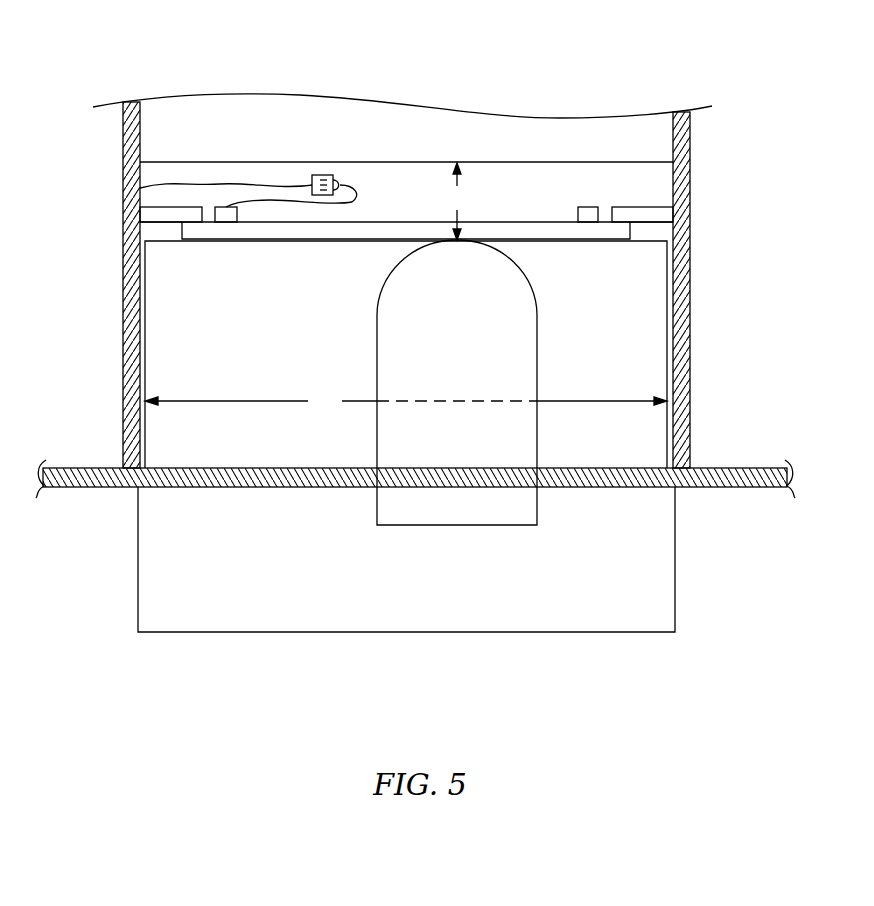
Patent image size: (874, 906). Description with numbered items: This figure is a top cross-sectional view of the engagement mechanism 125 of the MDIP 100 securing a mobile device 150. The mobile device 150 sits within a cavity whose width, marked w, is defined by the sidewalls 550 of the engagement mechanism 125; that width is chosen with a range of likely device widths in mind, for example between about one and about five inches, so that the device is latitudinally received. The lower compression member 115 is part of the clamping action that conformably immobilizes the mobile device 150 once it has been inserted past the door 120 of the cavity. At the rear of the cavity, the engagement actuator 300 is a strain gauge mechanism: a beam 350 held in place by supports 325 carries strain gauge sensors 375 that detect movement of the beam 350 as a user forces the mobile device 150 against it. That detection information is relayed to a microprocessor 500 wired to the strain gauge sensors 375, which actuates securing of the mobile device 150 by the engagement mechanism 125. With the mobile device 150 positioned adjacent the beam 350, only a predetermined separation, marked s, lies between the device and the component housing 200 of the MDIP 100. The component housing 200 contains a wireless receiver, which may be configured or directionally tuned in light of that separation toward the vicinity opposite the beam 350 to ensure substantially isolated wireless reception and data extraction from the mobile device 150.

The MDIP 100 is at (445, 355).
The lower compression member 115 is at (647, 318).
The door 120 is at (153, 565).
The engagement mechanism 125 is at (251, 505).
The mobile device 150 is at (525, 502).
The component housing 200 is at (610, 133).
The engagement actuator 300 is at (411, 184).
The supports 325 is at (648, 210).
The beam 350 is at (510, 224).
The strain gauge sensors 375 is at (590, 207).
The microprocessor 500 is at (318, 175).
The sidewalls 550 is at (127, 303).